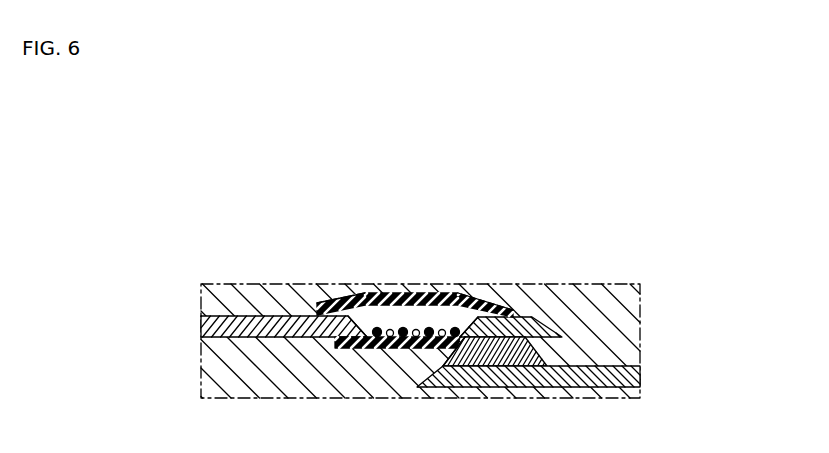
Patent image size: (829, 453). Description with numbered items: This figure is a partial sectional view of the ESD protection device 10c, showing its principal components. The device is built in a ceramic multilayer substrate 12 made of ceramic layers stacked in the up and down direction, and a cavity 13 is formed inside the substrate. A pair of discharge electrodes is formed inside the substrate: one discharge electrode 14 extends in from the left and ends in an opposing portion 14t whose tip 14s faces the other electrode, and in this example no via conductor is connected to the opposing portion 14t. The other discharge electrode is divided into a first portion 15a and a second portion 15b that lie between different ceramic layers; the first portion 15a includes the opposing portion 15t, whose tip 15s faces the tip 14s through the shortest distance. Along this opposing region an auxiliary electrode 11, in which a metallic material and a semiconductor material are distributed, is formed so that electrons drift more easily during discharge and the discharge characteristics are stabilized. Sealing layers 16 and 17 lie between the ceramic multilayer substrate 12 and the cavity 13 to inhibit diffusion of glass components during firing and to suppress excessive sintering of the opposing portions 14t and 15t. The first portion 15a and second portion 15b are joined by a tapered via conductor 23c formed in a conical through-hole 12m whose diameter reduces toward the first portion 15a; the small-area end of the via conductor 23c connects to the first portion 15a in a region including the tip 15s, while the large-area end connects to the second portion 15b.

The ESD protection device 10c is at (705, 180).
The auxiliary electrode 11 is at (394, 322).
The ceramic multilayer substrate 12 is at (601, 293).
The through-hole 12m is at (532, 348).
The cavity 13 is at (462, 322).
The discharge electrode 14 is at (202, 323).
The tip 14s is at (367, 297).
The opposing portion 14t is at (345, 314).
The first portion 15a is at (560, 327).
The second portion 15b is at (640, 377).
The tip 15s is at (483, 316).
The opposing portion 15t is at (480, 322).
The sealing layer 16 is at (375, 349).
The sealing layer 17 is at (418, 292).
The via conductor 23c is at (465, 363).